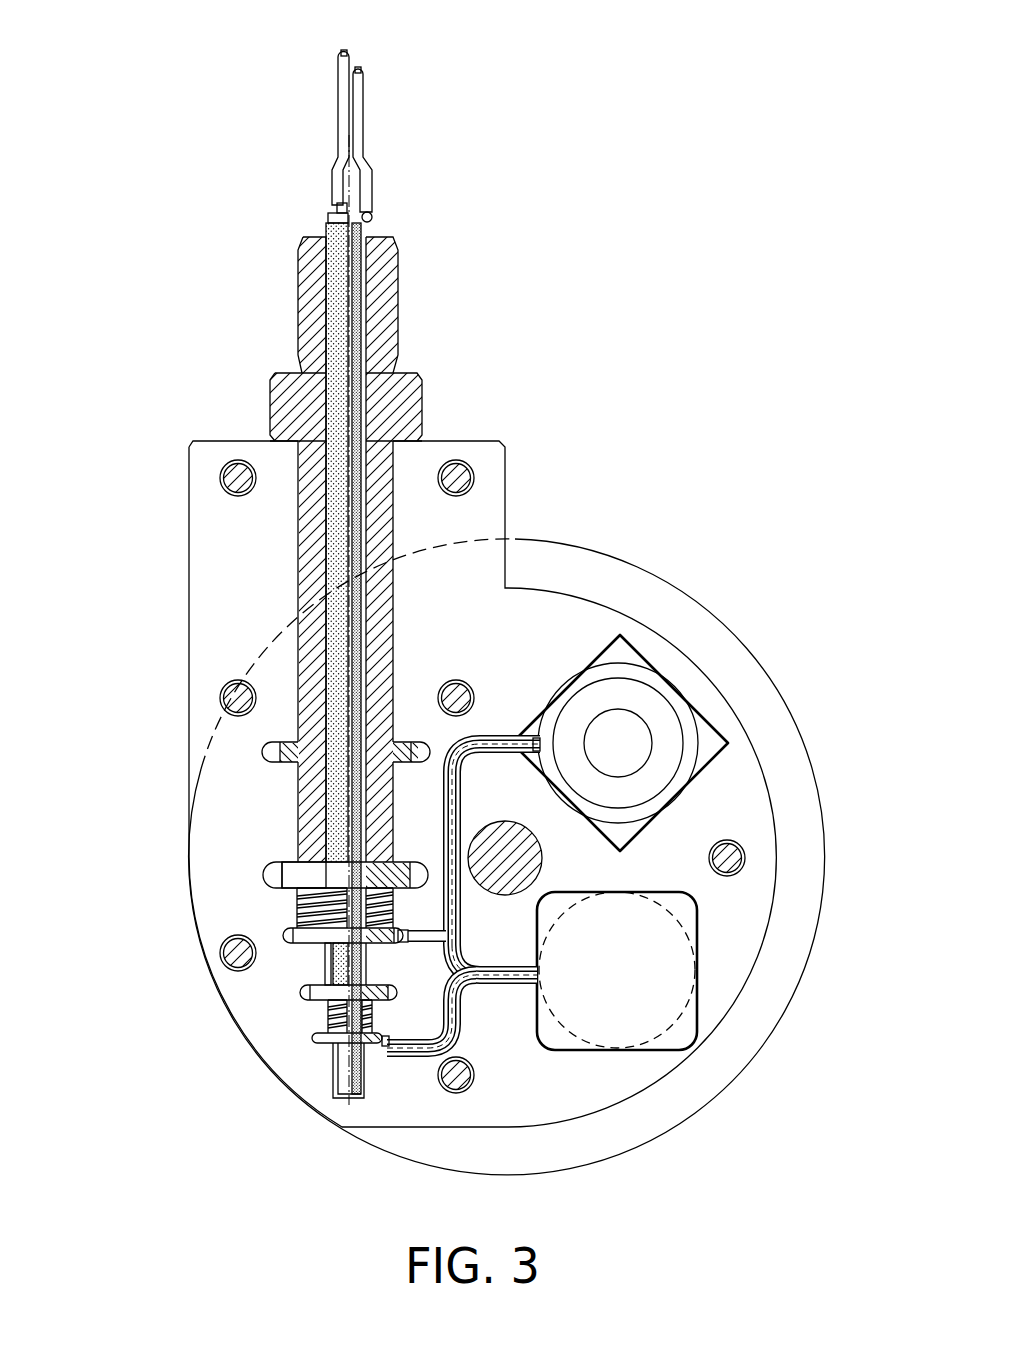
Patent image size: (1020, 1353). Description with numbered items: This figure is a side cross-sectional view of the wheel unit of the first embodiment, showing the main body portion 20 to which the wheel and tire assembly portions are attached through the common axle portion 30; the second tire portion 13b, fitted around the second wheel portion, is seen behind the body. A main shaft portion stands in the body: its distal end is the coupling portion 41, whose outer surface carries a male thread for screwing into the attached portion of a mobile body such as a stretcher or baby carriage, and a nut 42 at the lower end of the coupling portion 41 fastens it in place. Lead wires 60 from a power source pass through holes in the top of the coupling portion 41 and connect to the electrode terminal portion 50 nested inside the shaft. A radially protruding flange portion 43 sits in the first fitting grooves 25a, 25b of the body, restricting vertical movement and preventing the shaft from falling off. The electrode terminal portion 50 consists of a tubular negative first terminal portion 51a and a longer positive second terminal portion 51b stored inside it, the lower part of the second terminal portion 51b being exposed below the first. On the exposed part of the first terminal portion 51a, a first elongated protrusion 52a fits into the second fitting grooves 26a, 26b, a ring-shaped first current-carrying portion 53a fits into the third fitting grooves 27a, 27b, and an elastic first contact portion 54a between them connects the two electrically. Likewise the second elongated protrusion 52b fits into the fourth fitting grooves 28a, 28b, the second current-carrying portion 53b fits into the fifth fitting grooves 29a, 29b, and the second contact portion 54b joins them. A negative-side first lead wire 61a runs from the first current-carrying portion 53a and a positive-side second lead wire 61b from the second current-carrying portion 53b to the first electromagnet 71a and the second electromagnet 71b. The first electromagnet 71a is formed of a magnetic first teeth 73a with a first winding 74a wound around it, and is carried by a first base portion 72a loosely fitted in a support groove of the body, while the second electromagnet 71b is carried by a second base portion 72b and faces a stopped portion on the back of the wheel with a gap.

The second tire portion 13b is at (554, 1174).
The main body portion 20 is at (193, 428).
The first fitting groove 25a is at (252, 747).
The first fitting groove 25b is at (259, 749).
The second fitting groove 26a is at (251, 850).
The second fitting groove 26b is at (262, 873).
The third fitting groove 27a is at (239, 937).
The third fitting groove 27b is at (284, 929).
The fourth fitting groove 28a is at (236, 1011).
The fourth fitting groove 28b is at (287, 990).
The fifth fitting groove 29a is at (256, 1078).
The fifth fitting groove 29b is at (306, 1041).
The axle portion 30 is at (527, 862).
The coupling portion 41 is at (398, 262).
The nut 42 is at (422, 402).
The flange portion 43 is at (290, 745).
The electrode terminal portion 50 is at (285, 588).
The first terminal portion 51a is at (337, 283).
The second terminal portion 51b is at (350, 291).
The first elongated protrusion 52a is at (293, 872).
The second elongated protrusion 52b is at (326, 965).
The first current-carrying portion 53a is at (297, 910).
The second current-carrying portion 53b is at (328, 1020).
The first contact portion 54a is at (300, 896).
The second contact portion 54b is at (326, 1003).
The lead wires 60 is at (366, 52).
The first lead wire 61a is at (493, 742).
The second lead wire 61b is at (402, 1050).
The first electromagnet 71a is at (713, 782).
The second electromagnet 71b is at (657, 1040).
The first base portion 72a is at (710, 738).
The second base portion 72b is at (688, 1022).
The first teeth 73a is at (637, 738).
The first winding 74a is at (622, 698).